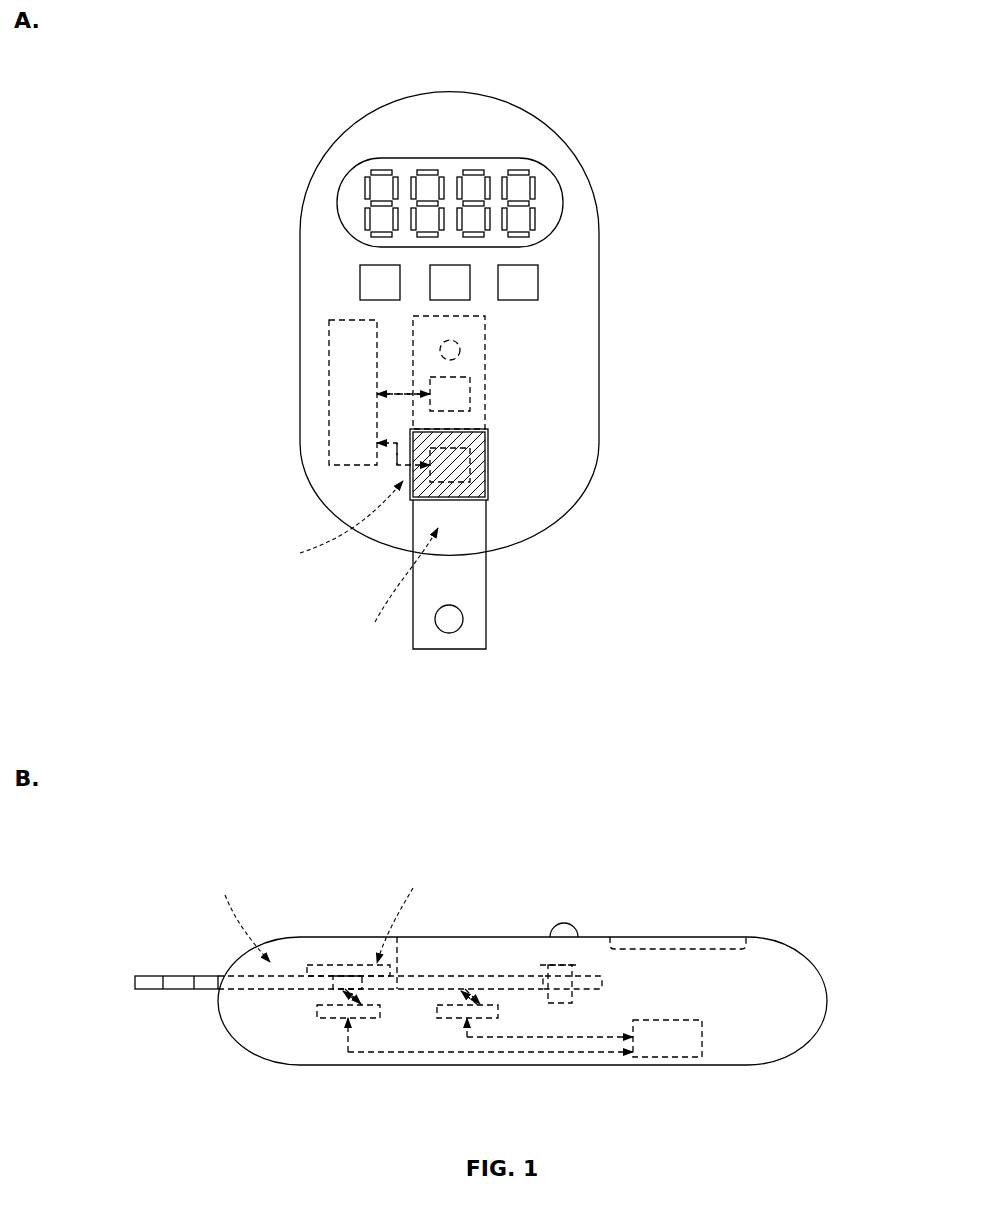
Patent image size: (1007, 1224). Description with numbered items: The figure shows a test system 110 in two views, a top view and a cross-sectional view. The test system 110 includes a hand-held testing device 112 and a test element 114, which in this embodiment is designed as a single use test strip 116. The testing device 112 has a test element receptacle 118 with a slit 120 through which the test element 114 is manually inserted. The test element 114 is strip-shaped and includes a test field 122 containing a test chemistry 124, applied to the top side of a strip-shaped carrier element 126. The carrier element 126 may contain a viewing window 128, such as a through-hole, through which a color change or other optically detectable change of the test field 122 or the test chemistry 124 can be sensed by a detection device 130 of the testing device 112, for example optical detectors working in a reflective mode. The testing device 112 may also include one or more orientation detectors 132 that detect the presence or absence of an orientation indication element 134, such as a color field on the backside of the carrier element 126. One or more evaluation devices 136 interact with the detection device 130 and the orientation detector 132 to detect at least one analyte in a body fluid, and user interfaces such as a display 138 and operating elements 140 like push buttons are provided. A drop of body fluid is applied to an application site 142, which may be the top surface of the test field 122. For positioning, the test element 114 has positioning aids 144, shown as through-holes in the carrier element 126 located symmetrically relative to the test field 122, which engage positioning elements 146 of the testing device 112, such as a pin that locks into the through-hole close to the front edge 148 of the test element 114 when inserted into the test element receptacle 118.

The test system 110 is at (560, 585).
The testing device 112 is at (599, 338).
The test element 114 is at (384, 860).
The single use test strip 116 is at (486, 632).
The test element receptacle 118 is at (320, 745).
The slit 120 is at (455, 507).
The test field 122 is at (499, 699).
The test chemistry 124 is at (488, 433).
The carrier element 126 is at (428, 632).
The viewing window 128 is at (350, 976).
The detection device 130 is at (488, 482).
The orientation detector 132 is at (470, 392).
The orientation indication element 134 is at (455, 1000).
The evaluation device 136 is at (329, 392).
The display 138 is at (449, 158).
The operating elements 140 is at (538, 282).
The application site 142 is at (354, 722).
The positioning aid 144 is at (460, 343).
The positioning element 146 is at (460, 355).
The front edge 148 is at (453, 316).